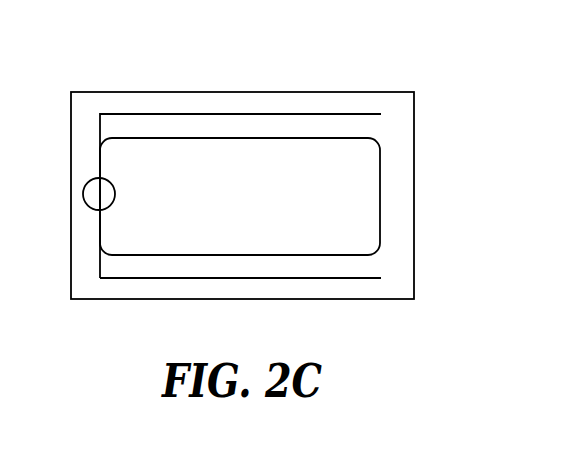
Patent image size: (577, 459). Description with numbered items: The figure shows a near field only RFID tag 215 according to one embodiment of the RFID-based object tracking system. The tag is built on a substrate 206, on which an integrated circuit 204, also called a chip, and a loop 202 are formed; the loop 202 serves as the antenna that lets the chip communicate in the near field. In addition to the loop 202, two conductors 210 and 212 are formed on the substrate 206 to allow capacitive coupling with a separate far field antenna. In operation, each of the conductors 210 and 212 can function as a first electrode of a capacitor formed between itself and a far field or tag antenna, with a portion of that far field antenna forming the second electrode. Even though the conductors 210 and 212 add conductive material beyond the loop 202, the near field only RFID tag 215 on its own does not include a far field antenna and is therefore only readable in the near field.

The near field only RFID tag 215 is at (157, 81).
The substrate 206 is at (417, 243).
The conductor 212 is at (330, 113).
The conductor 210 is at (327, 278).
The loop 202 is at (380, 177).
The integrated circuit 204 is at (113, 203).